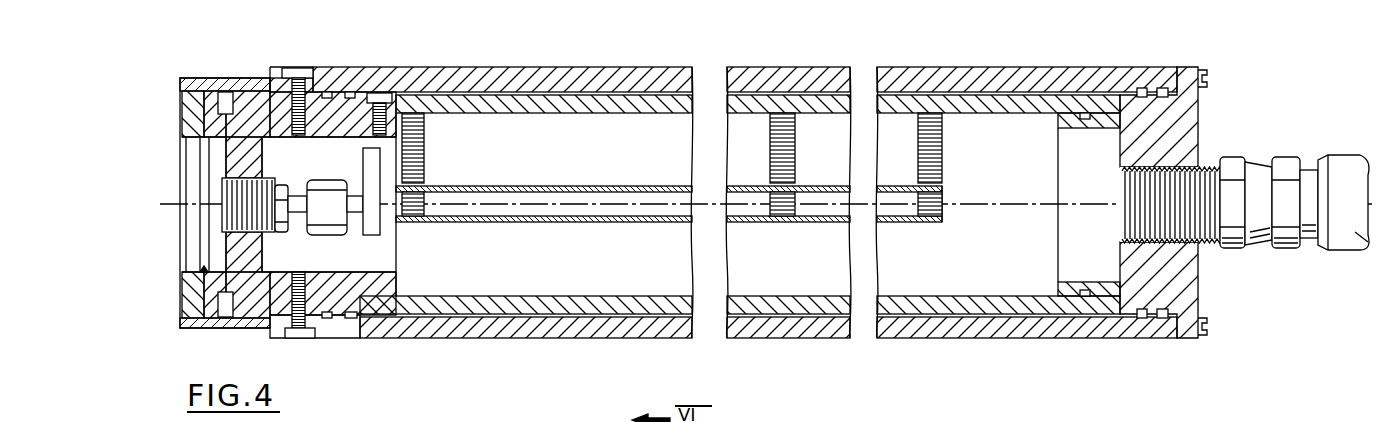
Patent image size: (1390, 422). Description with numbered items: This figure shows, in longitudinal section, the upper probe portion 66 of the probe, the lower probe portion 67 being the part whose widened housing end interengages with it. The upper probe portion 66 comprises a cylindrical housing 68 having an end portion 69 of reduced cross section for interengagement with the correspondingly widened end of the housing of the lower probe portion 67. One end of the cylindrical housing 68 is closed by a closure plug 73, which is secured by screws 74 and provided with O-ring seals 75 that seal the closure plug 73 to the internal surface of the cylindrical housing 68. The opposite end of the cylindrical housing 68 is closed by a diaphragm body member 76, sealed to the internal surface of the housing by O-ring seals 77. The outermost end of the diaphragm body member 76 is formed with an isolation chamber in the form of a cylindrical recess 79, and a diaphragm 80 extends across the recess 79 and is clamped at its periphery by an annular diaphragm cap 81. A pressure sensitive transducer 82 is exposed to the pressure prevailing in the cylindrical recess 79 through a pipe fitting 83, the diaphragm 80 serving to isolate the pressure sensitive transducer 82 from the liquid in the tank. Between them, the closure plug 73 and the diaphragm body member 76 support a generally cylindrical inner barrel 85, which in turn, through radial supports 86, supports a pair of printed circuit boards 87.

The upper probe portion 66 is at (955, 340).
The lower probe portion 67 is at (1147, 288).
The cylindrical housing 68 is at (372, 340).
The end portion 69 is at (243, 330).
The closure plug 73 is at (1198, 290).
The screws 74 is at (1207, 330).
The O-ring seals 75 is at (1165, 318).
The diaphragm body member 76 is at (245, 260).
The O-ring seals 77 is at (350, 320).
The cylindrical recess 79 is at (222, 153).
The diaphragm 80 is at (230, 170).
The annular diaphragm cap 81 is at (192, 330).
The pressure sensitive transducer 82 is at (400, 150).
The pipe fitting 83 is at (320, 183).
The inner barrel 85 is at (533, 110).
The radial supports 86 is at (425, 162).
The printed circuit boards 87 is at (587, 217).